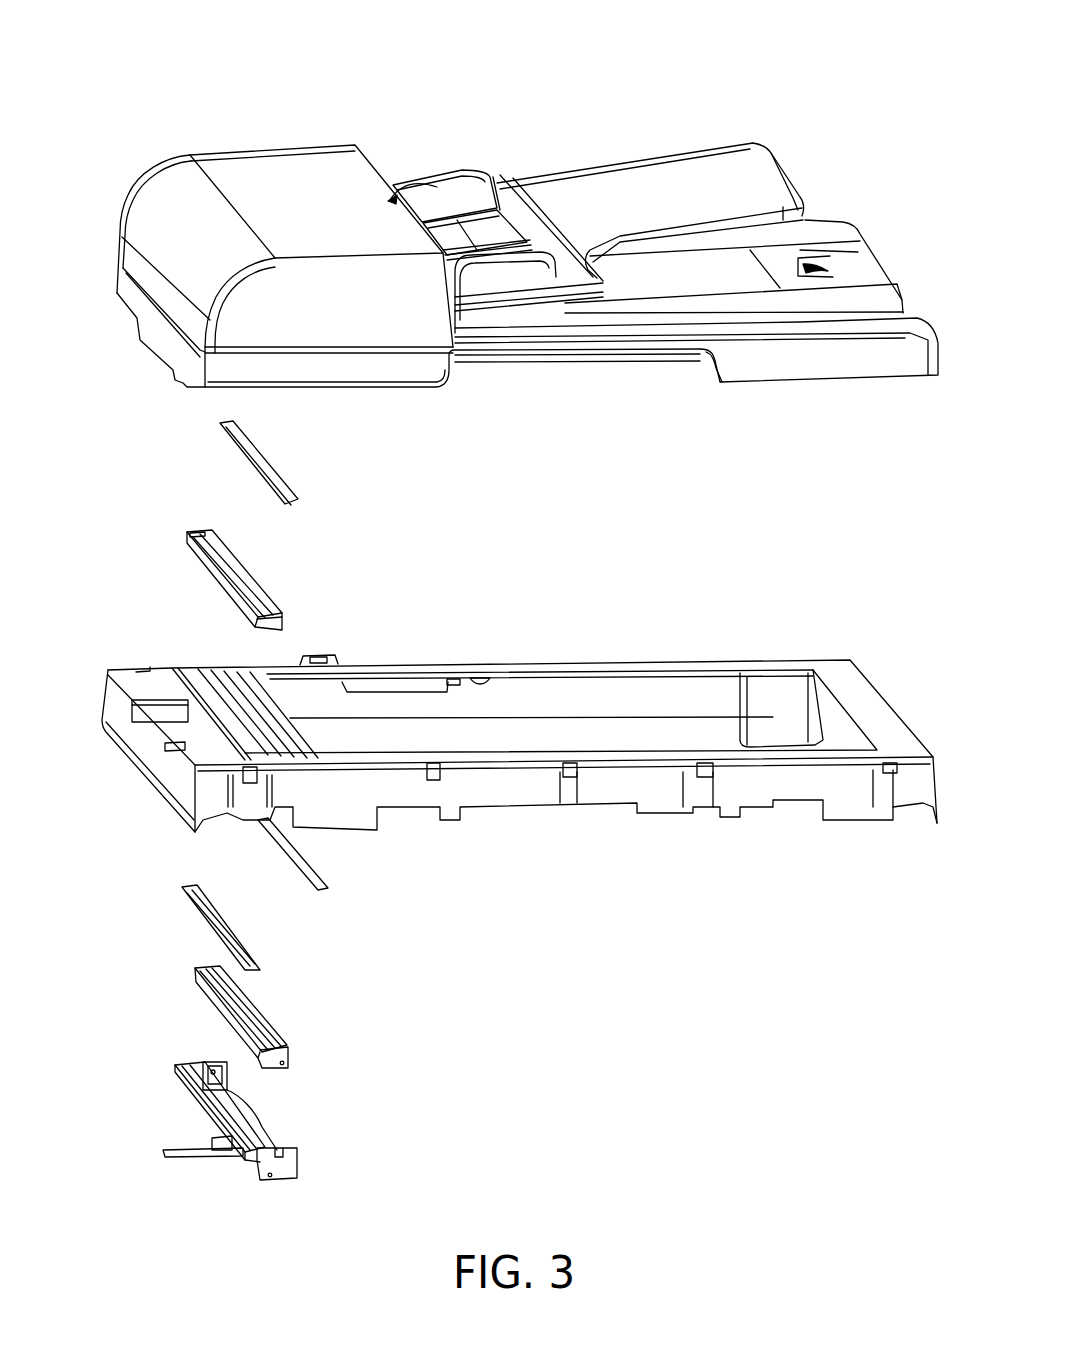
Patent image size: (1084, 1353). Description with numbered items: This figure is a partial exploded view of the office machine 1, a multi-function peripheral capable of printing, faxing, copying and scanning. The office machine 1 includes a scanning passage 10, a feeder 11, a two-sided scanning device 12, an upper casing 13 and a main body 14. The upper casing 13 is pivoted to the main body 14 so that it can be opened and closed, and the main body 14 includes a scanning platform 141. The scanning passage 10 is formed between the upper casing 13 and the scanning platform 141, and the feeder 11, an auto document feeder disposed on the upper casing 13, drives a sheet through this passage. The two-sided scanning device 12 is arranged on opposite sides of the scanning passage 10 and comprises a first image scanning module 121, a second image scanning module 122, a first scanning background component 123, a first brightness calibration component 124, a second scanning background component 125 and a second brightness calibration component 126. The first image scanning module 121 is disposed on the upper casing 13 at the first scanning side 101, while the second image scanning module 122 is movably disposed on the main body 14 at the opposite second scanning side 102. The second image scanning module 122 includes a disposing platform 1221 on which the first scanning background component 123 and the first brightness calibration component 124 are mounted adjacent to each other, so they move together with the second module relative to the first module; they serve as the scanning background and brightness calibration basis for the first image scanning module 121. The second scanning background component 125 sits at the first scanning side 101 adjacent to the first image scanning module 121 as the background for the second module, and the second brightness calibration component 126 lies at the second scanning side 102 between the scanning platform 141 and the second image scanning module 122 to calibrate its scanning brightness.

The office machine 1 is at (826, 62).
The scanning passage 10 is at (392, 487).
The first scanning side 101 is at (282, 412).
The second scanning side 102 is at (240, 702).
The feeder 11 is at (275, 168).
The upper casing 13 is at (880, 366).
The main body 14 is at (519, 709).
The scanning platform 141 is at (818, 660).
The two-sided scanning device 12 is at (82, 1108).
The first image scanning module 121 is at (200, 552).
The second image scanning module 122 is at (205, 992).
The disposing platform 1221 is at (190, 1072).
The first scanning background component 123 is at (185, 888).
The first brightness calibration component 124 is at (205, 920).
The second scanning background component 125 is at (240, 450).
The second brightness calibration component 126 is at (275, 840).